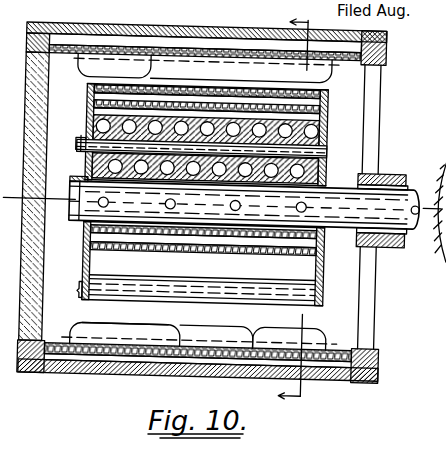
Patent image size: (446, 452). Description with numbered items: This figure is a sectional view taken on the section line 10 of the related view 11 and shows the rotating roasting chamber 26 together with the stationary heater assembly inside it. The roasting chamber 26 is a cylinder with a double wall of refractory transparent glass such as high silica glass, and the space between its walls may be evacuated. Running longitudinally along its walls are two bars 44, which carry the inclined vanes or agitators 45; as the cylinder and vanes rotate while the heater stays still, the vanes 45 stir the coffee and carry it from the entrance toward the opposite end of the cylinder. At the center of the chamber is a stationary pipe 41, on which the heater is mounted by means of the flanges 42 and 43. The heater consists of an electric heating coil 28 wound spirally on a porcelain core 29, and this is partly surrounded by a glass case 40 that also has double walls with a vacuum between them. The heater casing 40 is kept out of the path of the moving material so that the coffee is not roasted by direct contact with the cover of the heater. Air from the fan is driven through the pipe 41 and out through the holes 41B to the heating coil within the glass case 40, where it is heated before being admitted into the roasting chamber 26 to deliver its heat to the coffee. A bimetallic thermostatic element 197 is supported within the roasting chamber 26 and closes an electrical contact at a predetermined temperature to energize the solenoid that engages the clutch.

The section line 10— 10 is at (445, 267).
The Fig. 11 reference 11 is at (311, 205).
The roasting chamber 26 is at (202, 201).
The electric heating coil 28 is at (333, 110).
The porcelain core 29 is at (326, 160).
The glass case 40 is at (231, 248).
The stationary pipe 41 is at (351, 218).
The holes 41B is at (104, 194).
The flange 42 is at (328, 268).
The flange 43 is at (88, 233).
The bars 44 is at (387, 56).
The vanes or agitators 45 is at (151, 324).
The bimetallic thermostatic element 197 is at (281, 284).